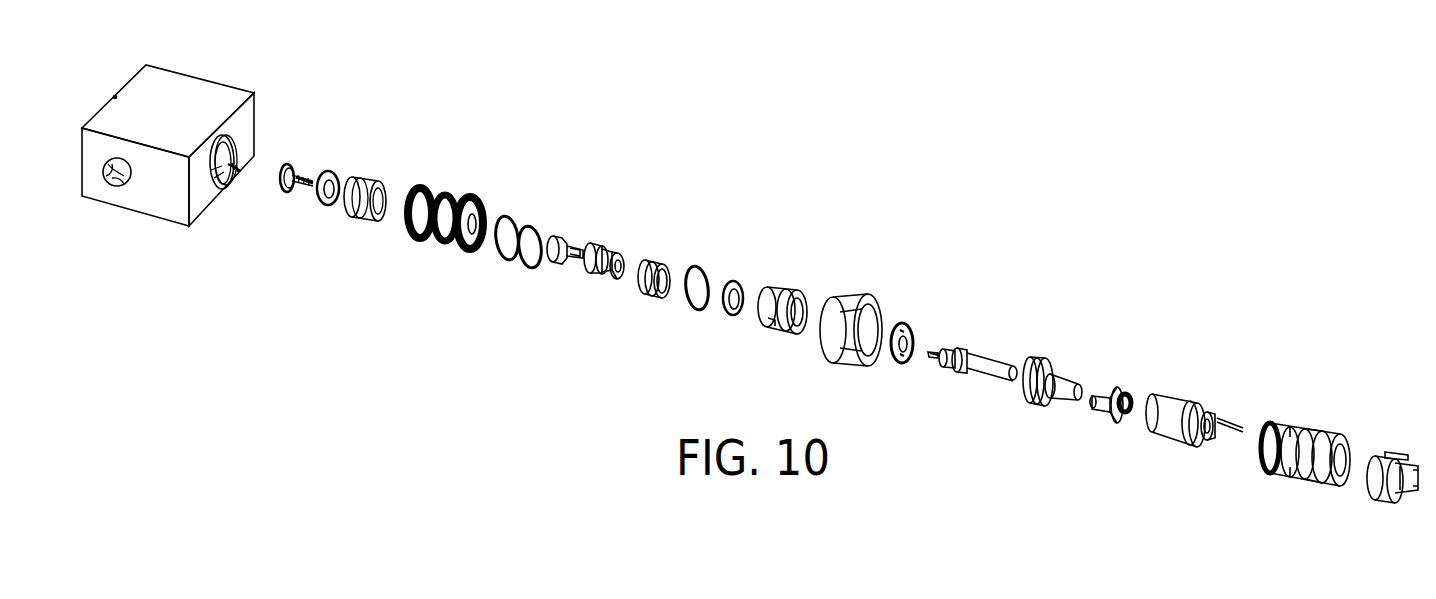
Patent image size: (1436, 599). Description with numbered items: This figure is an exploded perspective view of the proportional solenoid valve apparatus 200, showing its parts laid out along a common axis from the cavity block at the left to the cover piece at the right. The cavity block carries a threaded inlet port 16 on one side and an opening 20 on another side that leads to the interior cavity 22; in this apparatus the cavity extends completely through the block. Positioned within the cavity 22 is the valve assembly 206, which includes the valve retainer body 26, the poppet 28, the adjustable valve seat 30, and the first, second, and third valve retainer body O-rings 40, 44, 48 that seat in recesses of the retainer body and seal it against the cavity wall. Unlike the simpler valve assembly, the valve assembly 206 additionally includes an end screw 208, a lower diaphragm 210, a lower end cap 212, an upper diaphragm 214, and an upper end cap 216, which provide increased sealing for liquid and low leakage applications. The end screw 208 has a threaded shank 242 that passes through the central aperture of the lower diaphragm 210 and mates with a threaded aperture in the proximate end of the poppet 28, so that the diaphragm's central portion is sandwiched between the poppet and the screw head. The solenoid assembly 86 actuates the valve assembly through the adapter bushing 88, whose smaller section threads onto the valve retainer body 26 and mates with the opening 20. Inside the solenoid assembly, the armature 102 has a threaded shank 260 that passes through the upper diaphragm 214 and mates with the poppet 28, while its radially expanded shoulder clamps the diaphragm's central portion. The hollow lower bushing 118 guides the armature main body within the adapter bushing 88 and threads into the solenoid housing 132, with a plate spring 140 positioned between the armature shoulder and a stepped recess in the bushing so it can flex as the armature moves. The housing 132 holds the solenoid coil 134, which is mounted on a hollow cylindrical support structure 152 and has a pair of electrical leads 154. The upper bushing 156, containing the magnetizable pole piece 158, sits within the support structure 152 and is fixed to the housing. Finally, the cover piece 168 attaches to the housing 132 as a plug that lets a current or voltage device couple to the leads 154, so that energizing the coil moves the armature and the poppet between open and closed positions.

The threaded inlet port 16 is at (125, 183).
The opening 20 is at (240, 130).
The interior cavity 22 is at (238, 168).
The valve retainer body 26 is at (452, 190).
The poppet 28 is at (604, 244).
The adjustable valve seat 30 is at (653, 260).
The first valve retainer body O-ring 40 is at (513, 217).
The second valve retainer body O-ring 44 is at (703, 265).
The third valve retainer body O-ring 48 is at (540, 227).
The solenoid assembly 86 is at (1422, 400).
The adapter bushing 88 is at (862, 300).
The armature 102 is at (985, 373).
The lower bushing 118 is at (1048, 362).
The solenoid housing 132 is at (1350, 452).
The solenoid coil 134 is at (1177, 430).
The plate spring 140 is at (908, 327).
The hollow cylindrical support structure 152 is at (1207, 443).
The electrical leads 154 is at (1237, 422).
The upper bushing 156 is at (1103, 405).
The pole piece 158 is at (1133, 405).
The cover piece 168 is at (1377, 497).
The valve apparatus 200 is at (1022, 137).
The valve assembly 206 is at (643, 347).
The end screw 208 is at (292, 197).
The lower diaphragm 210 is at (337, 172).
The lower end cap 212 is at (360, 213).
The upper diaphragm 214 is at (740, 283).
The upper end cap 216 is at (763, 330).
The threaded shank 242 is at (308, 175).
The threaded shank 260 is at (943, 350).